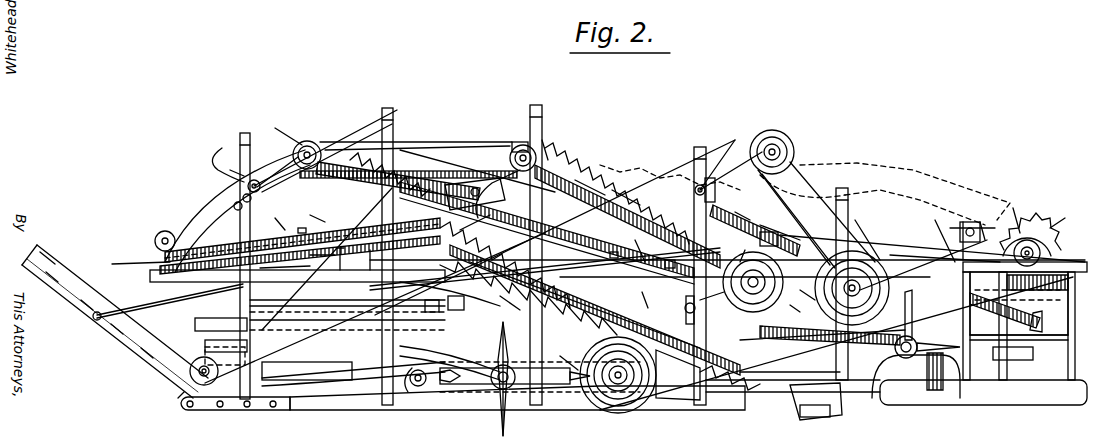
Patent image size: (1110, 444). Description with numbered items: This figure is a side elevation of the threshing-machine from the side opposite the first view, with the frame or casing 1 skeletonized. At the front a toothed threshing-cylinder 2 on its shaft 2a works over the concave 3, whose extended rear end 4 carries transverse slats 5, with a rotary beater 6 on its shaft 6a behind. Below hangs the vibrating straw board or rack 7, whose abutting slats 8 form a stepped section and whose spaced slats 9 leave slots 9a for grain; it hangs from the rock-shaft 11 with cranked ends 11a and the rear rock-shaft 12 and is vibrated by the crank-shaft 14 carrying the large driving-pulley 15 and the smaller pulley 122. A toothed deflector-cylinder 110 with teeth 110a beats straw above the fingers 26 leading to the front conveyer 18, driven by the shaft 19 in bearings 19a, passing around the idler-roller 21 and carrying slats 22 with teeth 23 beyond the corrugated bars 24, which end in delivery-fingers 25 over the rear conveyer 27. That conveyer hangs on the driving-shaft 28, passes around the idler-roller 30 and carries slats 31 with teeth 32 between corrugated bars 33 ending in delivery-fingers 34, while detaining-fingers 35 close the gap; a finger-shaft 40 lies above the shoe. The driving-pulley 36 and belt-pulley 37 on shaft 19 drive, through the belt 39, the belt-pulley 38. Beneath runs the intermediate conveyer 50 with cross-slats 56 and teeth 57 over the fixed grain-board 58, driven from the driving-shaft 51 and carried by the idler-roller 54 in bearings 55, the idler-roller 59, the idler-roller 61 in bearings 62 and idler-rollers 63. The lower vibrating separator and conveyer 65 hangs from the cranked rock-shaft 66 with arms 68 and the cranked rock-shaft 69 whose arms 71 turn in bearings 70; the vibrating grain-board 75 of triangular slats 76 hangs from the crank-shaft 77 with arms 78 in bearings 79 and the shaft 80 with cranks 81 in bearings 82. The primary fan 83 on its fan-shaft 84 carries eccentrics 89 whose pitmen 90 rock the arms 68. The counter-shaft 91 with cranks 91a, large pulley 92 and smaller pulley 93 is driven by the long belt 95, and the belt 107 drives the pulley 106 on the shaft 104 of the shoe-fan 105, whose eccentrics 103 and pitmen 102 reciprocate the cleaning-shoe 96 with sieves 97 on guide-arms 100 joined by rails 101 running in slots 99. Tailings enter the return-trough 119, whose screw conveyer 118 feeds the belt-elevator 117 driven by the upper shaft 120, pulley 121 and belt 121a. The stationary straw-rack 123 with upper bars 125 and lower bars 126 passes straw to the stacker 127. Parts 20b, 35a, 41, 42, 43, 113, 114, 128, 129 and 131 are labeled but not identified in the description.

The frame 1 is at (245, 133).
The toothed threshing-cylinder 2 is at (1017, 214).
The shaft 2a is at (1060, 219).
The concave 3 is at (1019, 303).
The extended rear end 4 is at (1040, 235).
The transverse slats 5 is at (945, 219).
The rotary beater 6 is at (960, 237).
The shaft 6a is at (977, 226).
The vibrating straw board or rack 7 is at (776, 228).
The slats 8 is at (905, 258).
The slats 9 is at (742, 214).
The spaces or slots 9a is at (755, 230).
The rock-shaft 11 is at (1015, 360).
The cranked ends 11a is at (1006, 315).
The rear rock-shaft 12 is at (732, 252).
The crank-shaft 14 is at (830, 316).
The large driving-pulley 15 is at (760, 238).
The front conveyer 18 is at (588, 178).
The shaft 19 is at (545, 150).
The bearings 19a is at (522, 140).
The block 20b is at (669, 255).
The idler-roller 21 is at (642, 245).
The transverse slats 22 is at (585, 170).
The forwardly-inclined teeth 23 is at (636, 170).
The corrugated straw bars or rods 24 is at (565, 158).
The delivery-fingers 25 is at (470, 142).
The fingers 26 is at (655, 175).
The rear traveling conveyer 27 is at (428, 168).
The driving-shaft 28 is at (278, 129).
The idler-roller 30 is at (478, 188).
The transverse slats 31 is at (322, 187).
The forwardly-extending teeth 32 is at (318, 136).
The corrugated bars 33 is at (436, 160).
The delivery-fingers 34 is at (229, 165).
The detaining-fingers 35 is at (498, 185).
The lever arm 35a is at (487, 220).
The driving-pulley 36 is at (552, 200).
The belt-pulley 37 is at (518, 145).
The belt-pulley 38 is at (302, 142).
The belt 39 is at (406, 142).
The finger-shaft 40 is at (248, 184).
The spring 41 is at (228, 157).
The arm 42 is at (258, 172).
The arm 43 is at (198, 215).
The second or intermediate conveyer 50 is at (262, 235).
The driving-shaft 51 is at (712, 294).
The idler-roller 54 is at (155, 238).
The bearings 55 is at (142, 256).
The cross-slats 56 is at (614, 253).
The teeth 57 is at (278, 216).
The fixed grain-board 58 is at (556, 250).
The idler-roller 59 is at (612, 300).
The idler-roller 61 is at (644, 294).
The bearings 62 is at (686, 306).
The idler-rollers 63 is at (610, 320).
The lower vibrating separator and conveyer 65 is at (665, 335).
The cranked rock-shaft 66 is at (730, 376).
The arms 68 is at (790, 318).
The cranked rock-shaft 69 is at (372, 296).
The bearings 70 is at (364, 255).
The arms 71 is at (346, 255).
The vibrating grain-board 75 is at (502, 300).
The triangular slats 76 is at (511, 298).
The crank-shaft 77 is at (815, 418).
The arms 78 is at (795, 405).
The bearings 79 is at (790, 372).
The shaft 80 is at (454, 310).
The cranks 81 is at (428, 312).
The bearings 82 is at (506, 306).
The primary fan 83 is at (906, 322).
The fan-shaft 84 is at (917, 342).
The eccentrics 89 is at (900, 365).
The pitmen 90 is at (830, 335).
The counter-shaft 91 is at (598, 406).
The cranks 91a is at (678, 386).
The large pulley 92 is at (632, 410).
The smaller pulley 93 is at (618, 380).
The long belt 95 is at (792, 360).
The cleaning-shoe 96 is at (310, 312).
The sieves or riddles 97 is at (200, 340).
The longitudinal slots 99 is at (353, 374).
The guide-arms 100 is at (345, 338).
The rails 101 is at (307, 372).
The pitmen 102 is at (420, 352).
The eccentrics 103 is at (488, 386).
The shaft 104 is at (550, 392).
The shoe-fan 105 is at (500, 350).
The pulley 106 is at (495, 368).
The belt 107 is at (563, 356).
The toothed deflector-cylinder 110 is at (555, 227).
The teeth 110a is at (714, 190).
The roller 113 is at (420, 385).
The bracket 114 is at (406, 390).
The belt-elevator 117 is at (198, 358).
The screw conveyer 118 is at (190, 370).
The return-trough 119 is at (178, 398).
The upper shaft 120 is at (795, 152).
The pulley 121 is at (790, 145).
The belt 121a is at (800, 198).
The smaller pulley 122 is at (868, 200).
The stationary straw-rack 123 is at (200, 282).
The upper series of bars 125 is at (321, 247).
The lower series of bars 126 is at (310, 258).
The stacker 127 is at (100, 320).
The bracket 128 is at (788, 314).
The bracket 129 is at (806, 301).
The rod 131 is at (118, 262).